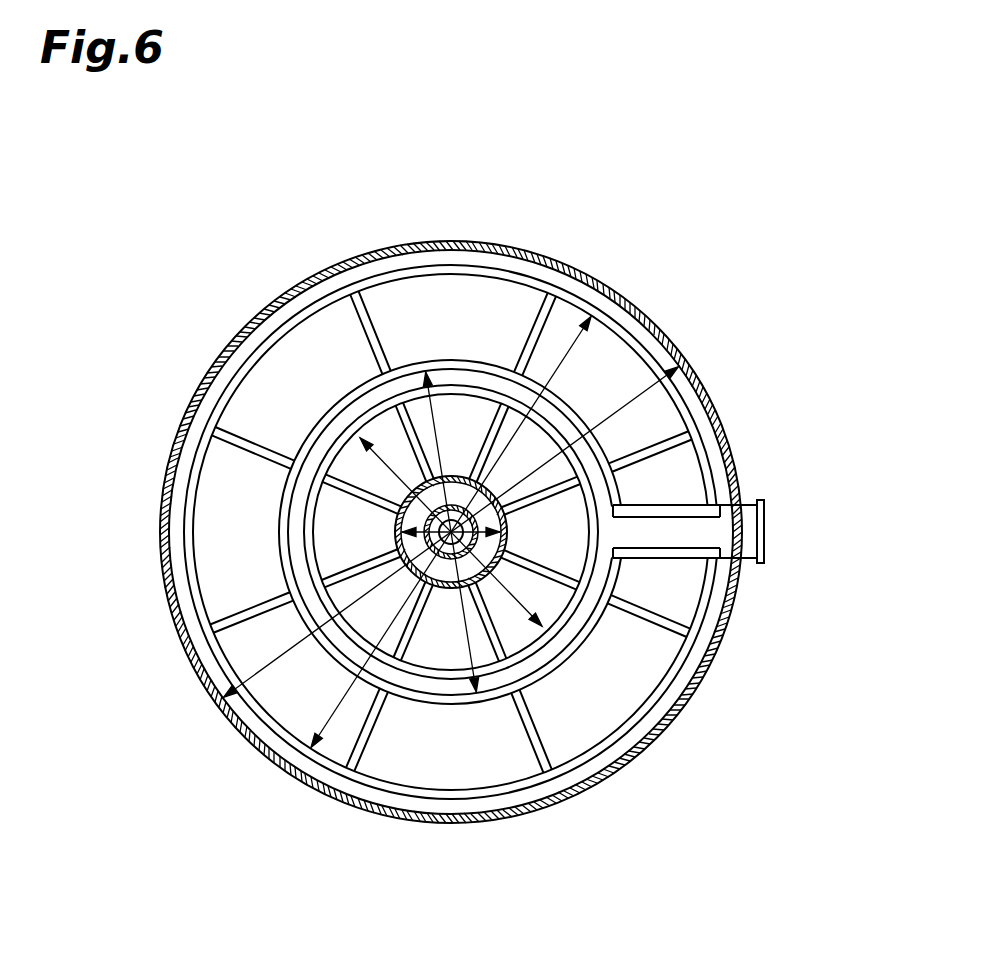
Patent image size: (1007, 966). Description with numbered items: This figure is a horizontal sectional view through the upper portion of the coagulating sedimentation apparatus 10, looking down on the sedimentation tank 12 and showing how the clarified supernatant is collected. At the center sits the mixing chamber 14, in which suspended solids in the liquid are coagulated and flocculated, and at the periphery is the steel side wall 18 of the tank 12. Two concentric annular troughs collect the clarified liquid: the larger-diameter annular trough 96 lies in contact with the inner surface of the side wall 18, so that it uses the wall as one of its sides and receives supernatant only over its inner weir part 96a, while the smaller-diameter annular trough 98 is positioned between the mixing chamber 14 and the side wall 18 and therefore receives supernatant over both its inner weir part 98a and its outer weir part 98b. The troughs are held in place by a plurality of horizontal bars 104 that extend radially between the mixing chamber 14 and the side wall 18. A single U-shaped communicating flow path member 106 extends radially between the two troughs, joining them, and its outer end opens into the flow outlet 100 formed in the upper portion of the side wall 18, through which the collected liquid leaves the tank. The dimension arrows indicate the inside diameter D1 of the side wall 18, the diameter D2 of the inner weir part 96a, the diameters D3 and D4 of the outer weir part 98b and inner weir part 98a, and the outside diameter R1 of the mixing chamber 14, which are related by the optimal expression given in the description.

The coagulating sedimentation apparatus 10 is at (662, 316).
The sedimentation tank 12 is at (164, 524).
The mixing chamber 14 is at (458, 478).
The side wall 18 is at (700, 383).
The larger-diameter annular trough 96 is at (229, 388).
The weir part 96a is at (470, 790).
The smaller-diameter annular trough 98 is at (332, 412).
The inner weir part 98a is at (527, 646).
The outer weir part 98b is at (533, 684).
The flow outlet 100 is at (763, 532).
The horizontal bars 104 is at (378, 320).
The communicating flow path member 106 is at (668, 558).
The inside diameter of the side wall D1 is at (451, 532).
The diameter of the inner weir part of the larger-diameter trough D2 is at (439, 532).
The diameter of the outer weir part of the smaller-diameter trough D3 is at (450, 532).
The diameter of the inner weir part of the smaller-diameter trough D4 is at (459, 532).
The outside diameter of the mixing chamber R1 is at (497, 523).